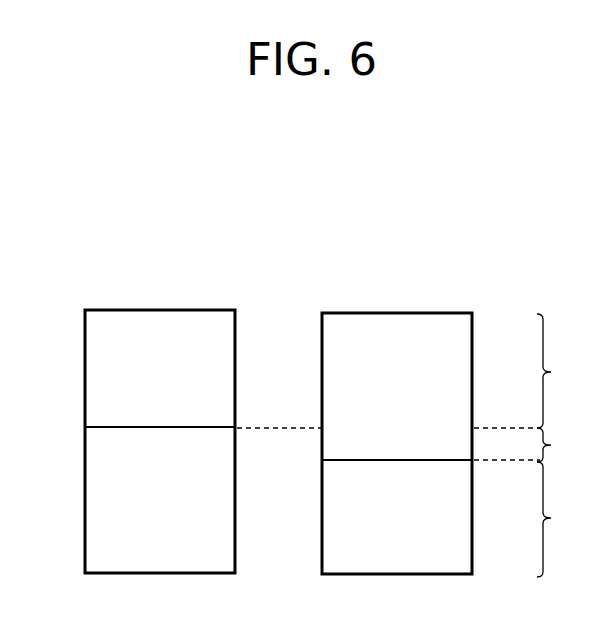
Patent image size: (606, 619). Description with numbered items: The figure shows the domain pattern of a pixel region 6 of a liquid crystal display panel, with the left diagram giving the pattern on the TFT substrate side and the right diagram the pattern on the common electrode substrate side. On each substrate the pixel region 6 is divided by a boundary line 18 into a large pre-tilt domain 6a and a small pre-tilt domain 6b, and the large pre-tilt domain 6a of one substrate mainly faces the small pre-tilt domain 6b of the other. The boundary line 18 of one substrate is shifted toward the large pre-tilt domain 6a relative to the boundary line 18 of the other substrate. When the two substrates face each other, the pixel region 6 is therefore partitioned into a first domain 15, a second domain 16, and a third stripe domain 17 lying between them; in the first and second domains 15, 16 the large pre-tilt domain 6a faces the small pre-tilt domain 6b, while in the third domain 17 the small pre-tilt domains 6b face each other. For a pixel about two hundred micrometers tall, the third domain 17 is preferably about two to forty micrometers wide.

The pixel region 6 is at (245, 396).
The large pre-tilt domain 6a is at (96, 342).
The small pre-tilt domain 6b is at (96, 489).
The boundary line 18 is at (134, 428).
The first domain 15 is at (566, 371).
The second domain 16 is at (566, 519).
The third stripe domain 17 is at (534, 446).